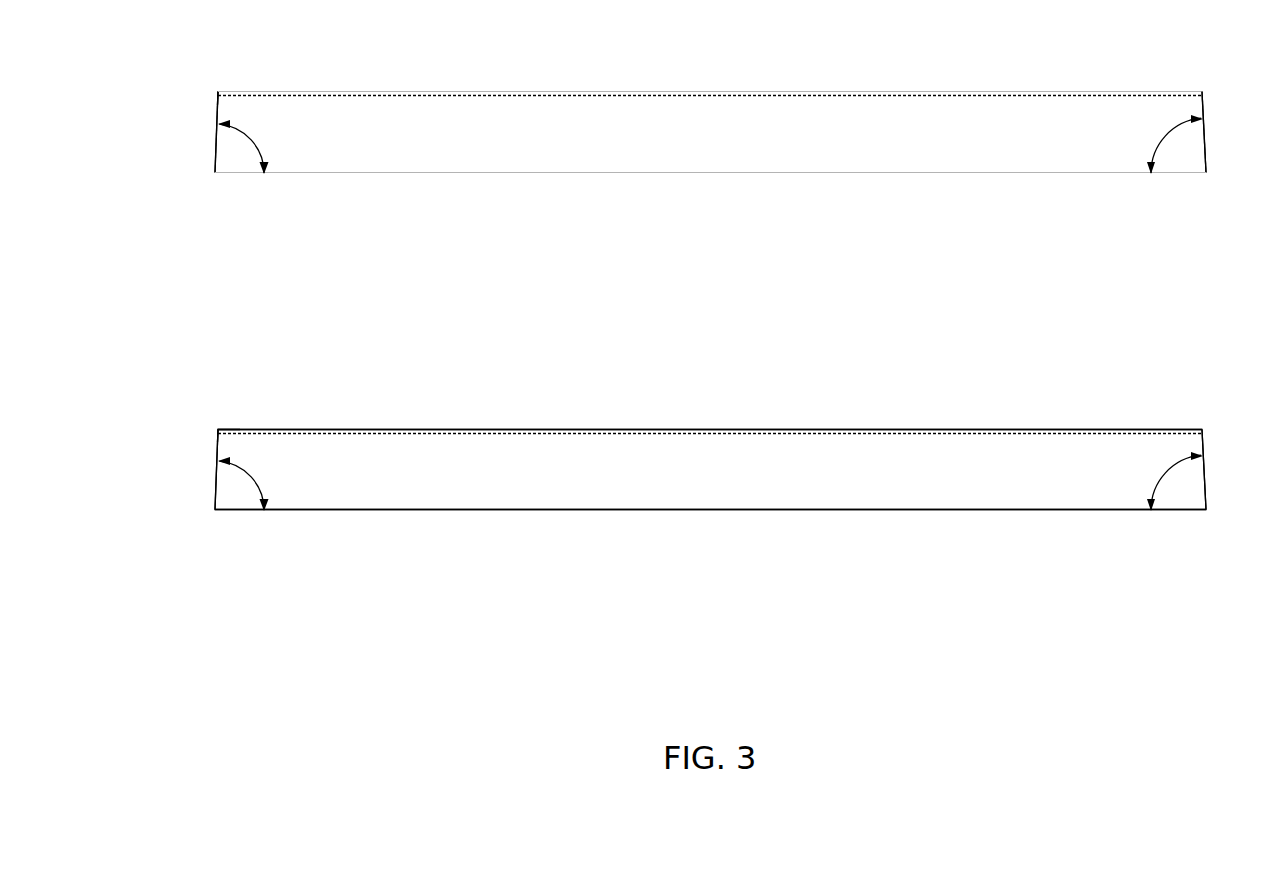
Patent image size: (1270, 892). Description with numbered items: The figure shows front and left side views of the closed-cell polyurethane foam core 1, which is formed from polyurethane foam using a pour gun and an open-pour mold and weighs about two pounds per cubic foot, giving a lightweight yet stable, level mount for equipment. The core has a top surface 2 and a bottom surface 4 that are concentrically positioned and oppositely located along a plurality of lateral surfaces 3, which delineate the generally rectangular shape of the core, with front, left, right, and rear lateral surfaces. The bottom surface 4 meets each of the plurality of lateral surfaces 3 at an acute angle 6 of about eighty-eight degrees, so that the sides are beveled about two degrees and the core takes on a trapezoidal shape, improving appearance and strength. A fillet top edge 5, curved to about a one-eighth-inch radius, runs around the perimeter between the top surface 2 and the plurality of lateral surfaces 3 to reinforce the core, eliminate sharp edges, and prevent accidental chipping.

The closed-cell polyurethane foam core 1 is at (822, 58).
The top surface 2 is at (545, 92).
The plurality of lateral surfaces 3 is at (908, 140).
The bottom surface 4 is at (578, 174).
The fillet top edge 5 is at (218, 92).
The acute angle 6 is at (255, 150).